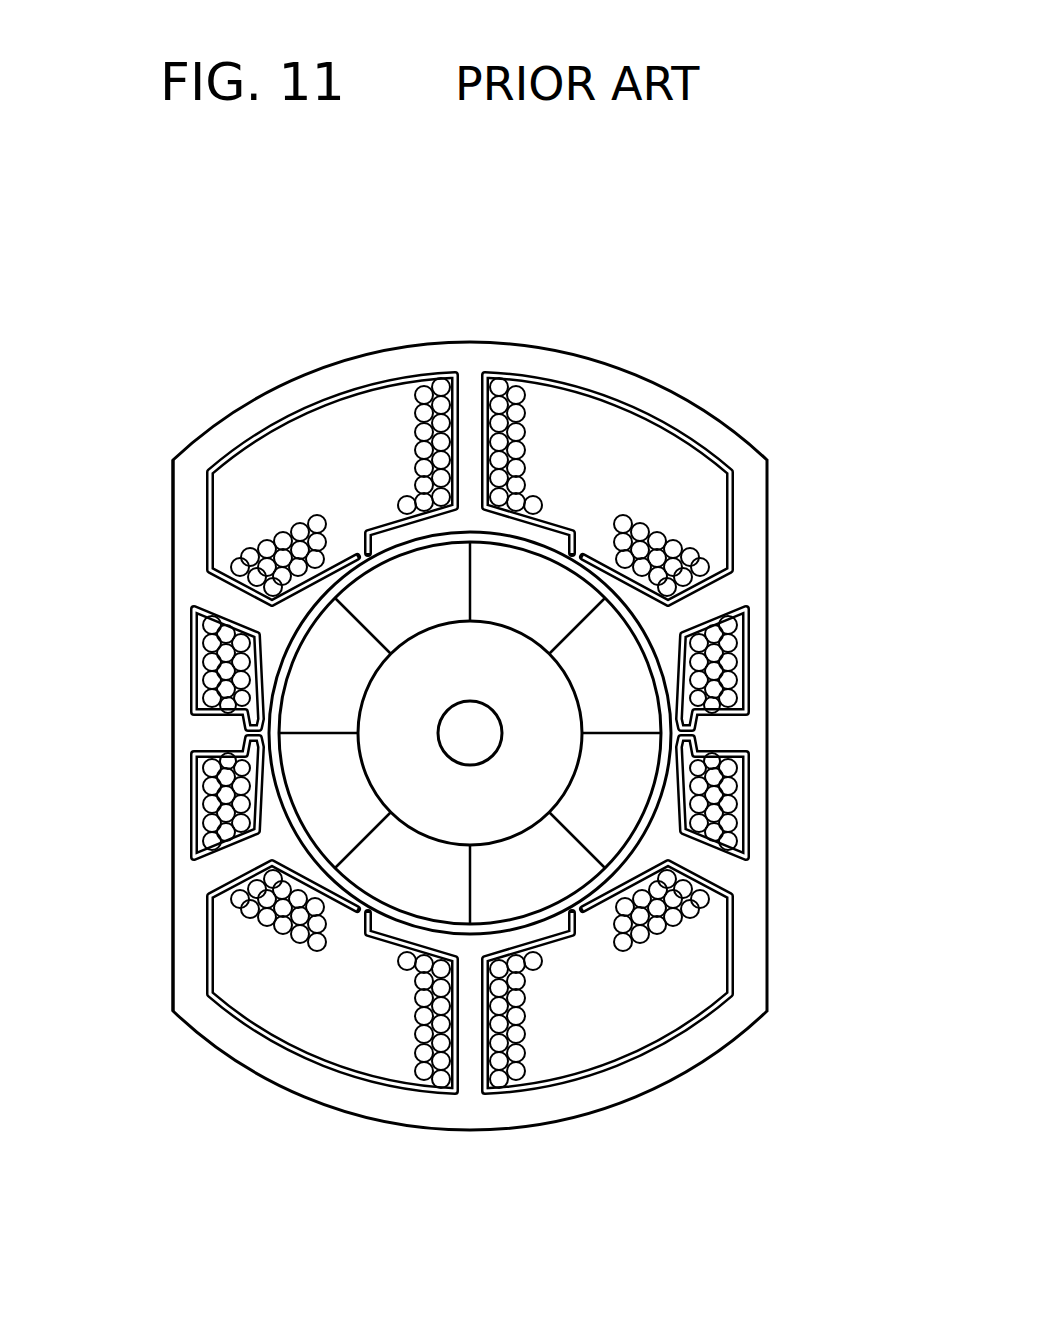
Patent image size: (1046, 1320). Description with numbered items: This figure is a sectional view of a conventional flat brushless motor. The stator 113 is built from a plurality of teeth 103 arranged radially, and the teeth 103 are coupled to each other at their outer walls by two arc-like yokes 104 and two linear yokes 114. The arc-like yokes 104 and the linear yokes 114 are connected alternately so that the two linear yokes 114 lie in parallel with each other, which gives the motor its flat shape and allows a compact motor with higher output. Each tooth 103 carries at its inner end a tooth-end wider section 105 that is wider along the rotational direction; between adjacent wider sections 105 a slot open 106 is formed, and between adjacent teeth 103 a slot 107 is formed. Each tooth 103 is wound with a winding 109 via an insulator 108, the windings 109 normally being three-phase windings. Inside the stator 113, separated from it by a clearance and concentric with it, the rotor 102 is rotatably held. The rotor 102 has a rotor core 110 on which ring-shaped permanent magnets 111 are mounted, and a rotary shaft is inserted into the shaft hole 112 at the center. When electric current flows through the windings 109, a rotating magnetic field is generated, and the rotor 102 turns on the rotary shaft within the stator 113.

The rotor 102 is at (662, 748).
The teeth 103 is at (722, 598).
The arc-like yoke 104 is at (607, 345).
The tooth-end wider section 105 is at (556, 540).
The slot open 106 is at (362, 548).
The slot 107 is at (225, 713).
The insulator 108 is at (195, 838).
The winding 109 is at (290, 940).
The rotor core 110 is at (516, 805).
The permanent magnets 111 is at (608, 795).
The shaft hole 112 is at (480, 738).
The stator 113 is at (173, 462).
The linear yoke 114 is at (757, 760).